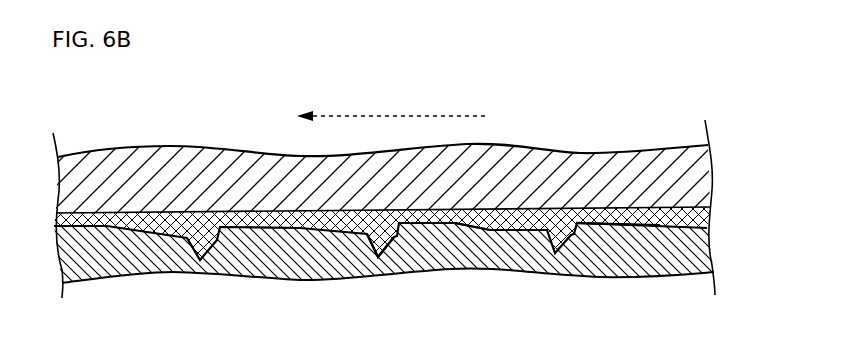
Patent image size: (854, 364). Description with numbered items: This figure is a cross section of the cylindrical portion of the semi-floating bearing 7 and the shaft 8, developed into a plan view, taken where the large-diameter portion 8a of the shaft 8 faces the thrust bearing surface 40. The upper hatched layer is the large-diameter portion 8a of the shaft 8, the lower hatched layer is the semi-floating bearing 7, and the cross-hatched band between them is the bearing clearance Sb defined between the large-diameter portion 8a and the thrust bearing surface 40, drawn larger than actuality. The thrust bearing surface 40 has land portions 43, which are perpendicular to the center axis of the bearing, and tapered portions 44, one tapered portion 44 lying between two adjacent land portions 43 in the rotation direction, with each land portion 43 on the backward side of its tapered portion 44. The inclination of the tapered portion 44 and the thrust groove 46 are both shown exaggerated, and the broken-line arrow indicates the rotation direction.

The shaft 8 is at (195, 178).
The large-diameter portion 8a is at (127, 178).
The bearing clearance Sb is at (553, 222).
The semi-floating bearing 7 is at (272, 265).
The thrust groove 46 is at (382, 258).
The thrust bearing surface 40 is at (488, 228).
The tapered portion 44 is at (513, 226).
The land portion 43 is at (636, 223).